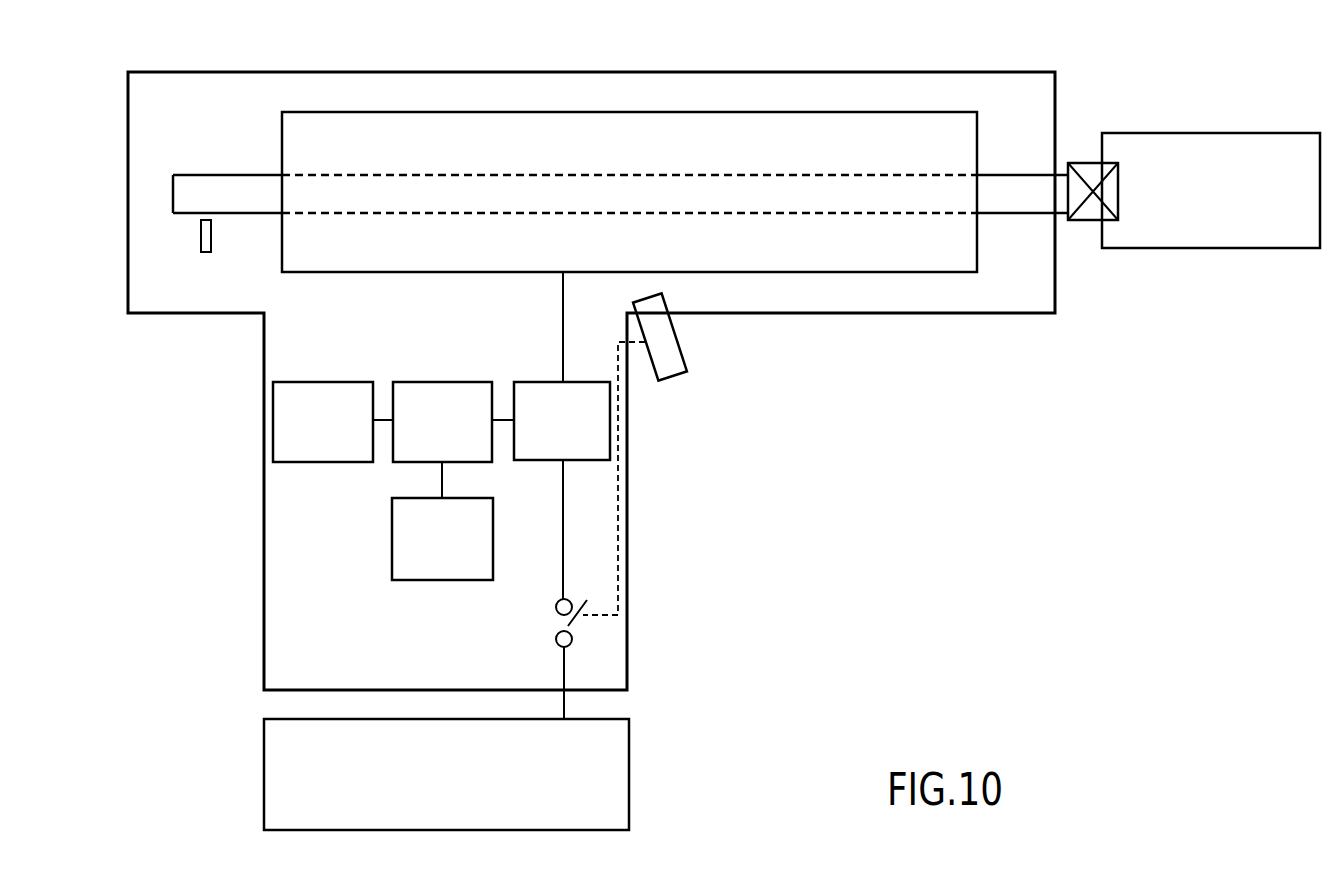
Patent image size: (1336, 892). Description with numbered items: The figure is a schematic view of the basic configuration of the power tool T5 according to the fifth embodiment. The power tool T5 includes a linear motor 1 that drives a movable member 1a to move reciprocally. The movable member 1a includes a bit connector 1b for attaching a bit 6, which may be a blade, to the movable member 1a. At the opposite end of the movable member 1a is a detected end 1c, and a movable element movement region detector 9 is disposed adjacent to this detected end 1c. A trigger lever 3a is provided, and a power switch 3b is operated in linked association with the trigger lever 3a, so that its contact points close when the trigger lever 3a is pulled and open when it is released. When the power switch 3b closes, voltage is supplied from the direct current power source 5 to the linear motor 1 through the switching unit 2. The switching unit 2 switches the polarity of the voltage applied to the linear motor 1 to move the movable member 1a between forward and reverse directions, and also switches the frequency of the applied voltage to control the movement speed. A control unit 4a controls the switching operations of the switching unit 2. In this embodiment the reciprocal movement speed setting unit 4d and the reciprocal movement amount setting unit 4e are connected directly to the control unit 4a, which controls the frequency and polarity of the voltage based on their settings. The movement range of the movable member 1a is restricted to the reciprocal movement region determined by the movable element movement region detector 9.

The linear motor 1 is at (888, 272).
The movable member 1a is at (770, 185).
The bit connector 1b is at (1088, 175).
The detected end 1c is at (196, 175).
The switching unit 2 is at (592, 462).
The trigger lever 3a is at (683, 340).
The power switch 3b is at (573, 637).
The control unit 4a is at (434, 382).
The reciprocal movement speed setting unit 4d is at (392, 530).
The reciprocal movement amount setting unit 4e is at (273, 418).
The direct current power source 5 is at (629, 763).
The bit 6 is at (1218, 248).
The movable element movement region detector 9 is at (206, 252).
The power tool T5 is at (1207, 88).